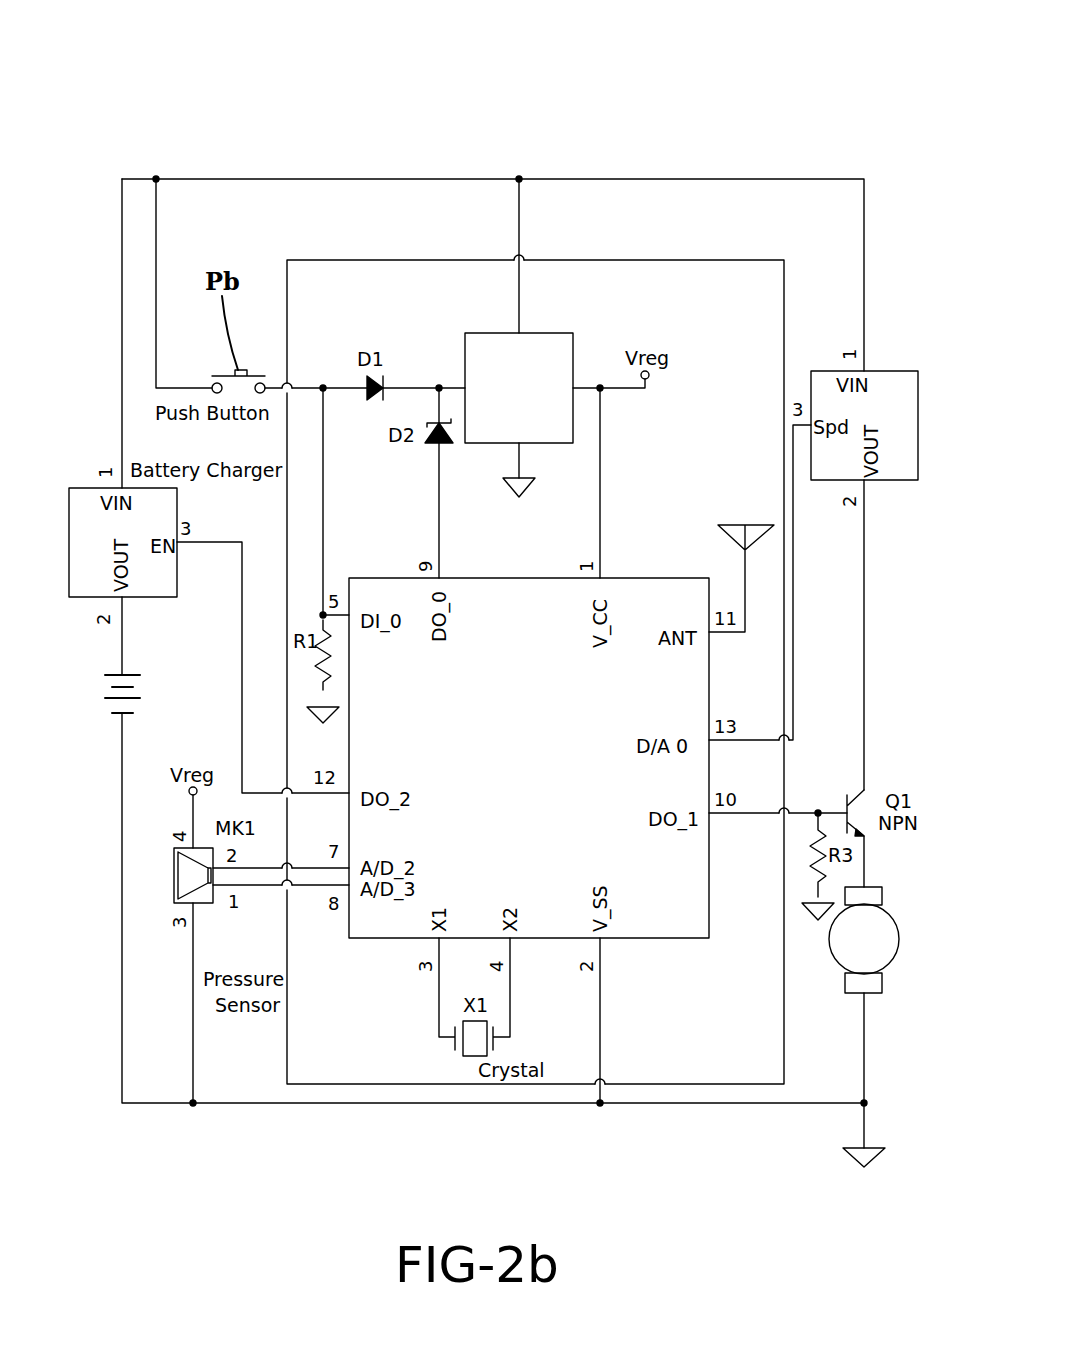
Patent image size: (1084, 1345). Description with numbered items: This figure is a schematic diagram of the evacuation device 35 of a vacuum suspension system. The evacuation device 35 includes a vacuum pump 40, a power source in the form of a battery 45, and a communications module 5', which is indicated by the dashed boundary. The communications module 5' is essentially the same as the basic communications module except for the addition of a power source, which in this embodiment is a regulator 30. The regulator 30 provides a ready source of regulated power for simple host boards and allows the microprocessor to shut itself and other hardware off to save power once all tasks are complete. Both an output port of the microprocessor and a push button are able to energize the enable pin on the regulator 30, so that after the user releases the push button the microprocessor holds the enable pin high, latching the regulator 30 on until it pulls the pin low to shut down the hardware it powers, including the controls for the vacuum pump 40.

The evacuation device 35 is at (118, 108).
The communications module 5' is at (533, 601).
The regulator 30 is at (555, 352).
The power source (battery) 45 is at (112, 703).
The vacuum pump 40 is at (885, 946).